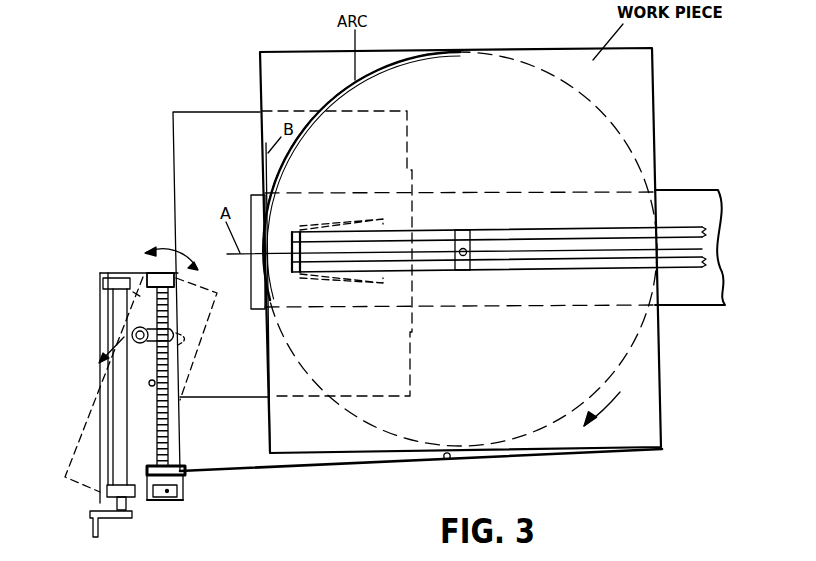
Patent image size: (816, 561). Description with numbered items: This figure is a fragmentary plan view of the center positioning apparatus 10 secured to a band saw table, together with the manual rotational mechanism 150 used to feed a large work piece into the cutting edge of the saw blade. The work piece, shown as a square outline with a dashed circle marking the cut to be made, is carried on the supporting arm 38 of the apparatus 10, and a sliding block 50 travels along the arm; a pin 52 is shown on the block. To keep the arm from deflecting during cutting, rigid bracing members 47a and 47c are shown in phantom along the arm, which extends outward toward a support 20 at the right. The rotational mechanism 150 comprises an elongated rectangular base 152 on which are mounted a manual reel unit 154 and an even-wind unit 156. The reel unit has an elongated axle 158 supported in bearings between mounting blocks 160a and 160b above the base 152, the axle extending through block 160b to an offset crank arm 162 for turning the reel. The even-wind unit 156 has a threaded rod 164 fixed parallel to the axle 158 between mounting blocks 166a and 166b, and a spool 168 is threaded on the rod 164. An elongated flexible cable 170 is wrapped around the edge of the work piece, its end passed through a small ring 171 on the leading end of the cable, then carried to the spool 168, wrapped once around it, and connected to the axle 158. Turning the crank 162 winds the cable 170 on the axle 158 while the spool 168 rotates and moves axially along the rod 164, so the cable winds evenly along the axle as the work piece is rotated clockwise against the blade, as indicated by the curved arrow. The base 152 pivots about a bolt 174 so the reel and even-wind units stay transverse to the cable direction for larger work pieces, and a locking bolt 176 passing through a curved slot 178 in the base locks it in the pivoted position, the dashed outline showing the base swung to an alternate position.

The center positioning apparatus 10 is at (688, 191).
The support arm 20 is at (704, 302).
The supporting arm 38 is at (548, 228).
The rigid bracing member 47a is at (362, 281).
The rigid bracing member 47c is at (338, 228).
The sliding block 50 is at (459, 232).
The pivot pin 52 is at (466, 256).
The rotational mechanism 150 is at (80, 233).
The elongated rectangular base 152 is at (102, 333).
The manual reel unit 154 is at (96, 277).
The even-wind unit 156 is at (144, 269).
The elongated axle 158 is at (117, 405).
The mounting block 160a is at (113, 284).
The mounting block 160b is at (108, 491).
The offset crank arm 162 is at (100, 530).
The threaded rod 164 is at (164, 422).
The mounting block 166a is at (180, 279).
The mounting block 166b is at (184, 501).
The spool 168 is at (186, 477).
The elongated flexible cable 170 is at (352, 462).
The small ring 171 is at (450, 459).
The bolt 174 is at (151, 387).
The locking bolt 176 is at (140, 343).
The curved slot 178 is at (100, 362).